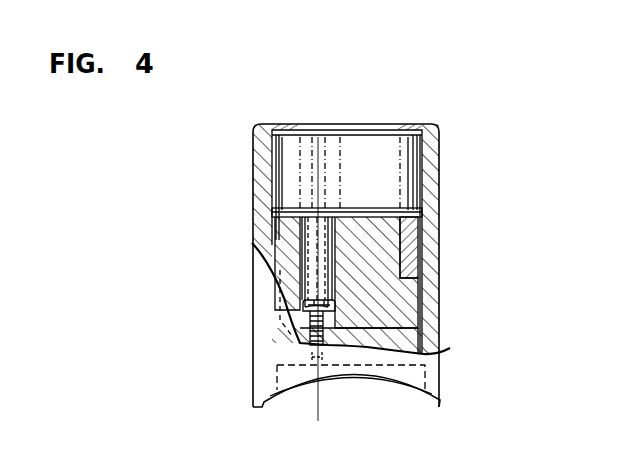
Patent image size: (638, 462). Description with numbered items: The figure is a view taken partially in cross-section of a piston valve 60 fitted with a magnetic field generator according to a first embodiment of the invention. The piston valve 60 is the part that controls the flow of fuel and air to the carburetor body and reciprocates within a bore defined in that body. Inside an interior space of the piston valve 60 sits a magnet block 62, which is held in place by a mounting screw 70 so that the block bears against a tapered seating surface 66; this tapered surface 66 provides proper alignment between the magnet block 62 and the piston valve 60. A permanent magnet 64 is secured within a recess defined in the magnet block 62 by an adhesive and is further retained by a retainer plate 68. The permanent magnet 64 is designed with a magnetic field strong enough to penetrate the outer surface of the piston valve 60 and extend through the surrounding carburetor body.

The piston valve 60 is at (432, 211).
The magnet block 62 is at (416, 301).
The permanent magnet 64 is at (410, 254).
The tapered seating surface 66 is at (445, 353).
The retainer plate 68 is at (395, 211).
The mounting screw 70 is at (300, 310).